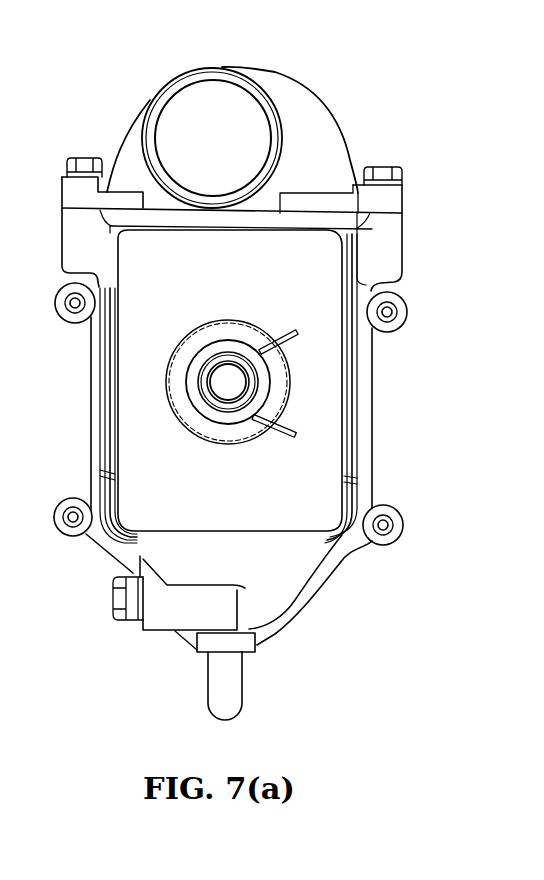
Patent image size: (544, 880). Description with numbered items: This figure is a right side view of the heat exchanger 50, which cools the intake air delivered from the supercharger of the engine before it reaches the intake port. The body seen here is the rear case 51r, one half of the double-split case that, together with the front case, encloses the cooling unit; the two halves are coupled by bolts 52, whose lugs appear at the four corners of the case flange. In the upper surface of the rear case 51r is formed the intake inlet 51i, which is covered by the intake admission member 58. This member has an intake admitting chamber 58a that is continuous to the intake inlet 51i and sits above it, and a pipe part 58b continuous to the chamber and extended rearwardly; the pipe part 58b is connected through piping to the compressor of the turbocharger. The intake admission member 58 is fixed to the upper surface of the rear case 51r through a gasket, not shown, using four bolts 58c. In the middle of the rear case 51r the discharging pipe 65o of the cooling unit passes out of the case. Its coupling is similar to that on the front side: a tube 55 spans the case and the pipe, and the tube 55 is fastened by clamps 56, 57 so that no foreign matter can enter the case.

The heat exchanger 50 is at (408, 282).
The intake inlet 51i is at (248, 128).
The rear case 51r is at (318, 438).
The bolts 52 is at (394, 318).
The tube 55 is at (237, 347).
The clamp 56 is at (198, 322).
The clamp 57 is at (207, 420).
The intake admission member 58 is at (338, 116).
The intake admitting chamber 58a is at (322, 157).
The pipe part 58b is at (265, 70).
The bolts 58c is at (75, 155).
The discharging pipe 65o is at (240, 400).